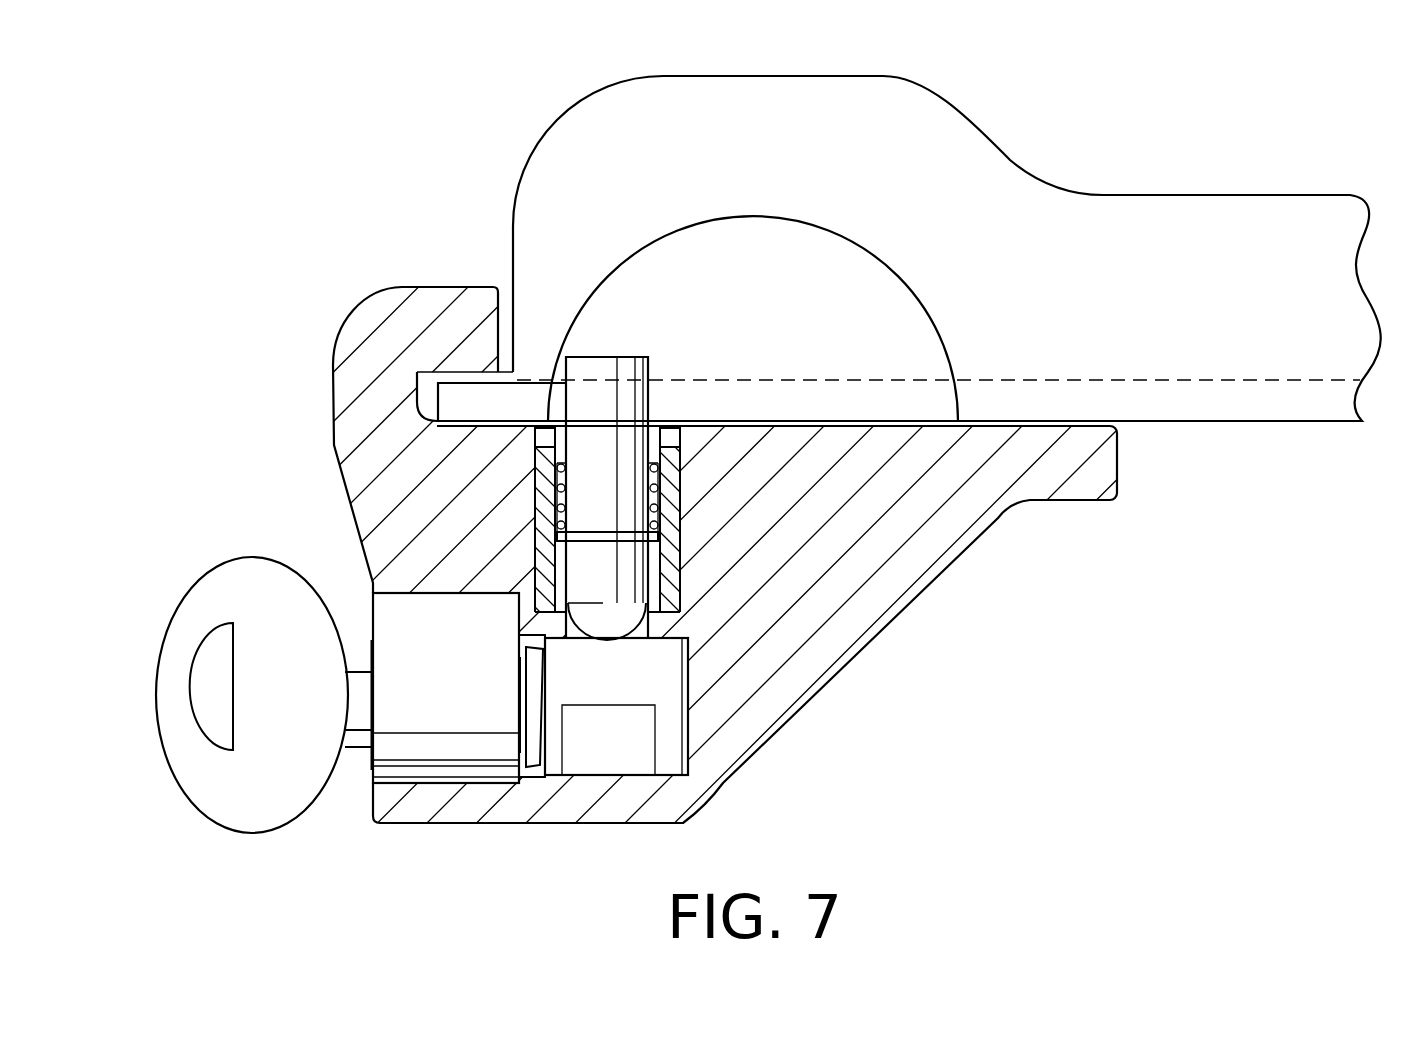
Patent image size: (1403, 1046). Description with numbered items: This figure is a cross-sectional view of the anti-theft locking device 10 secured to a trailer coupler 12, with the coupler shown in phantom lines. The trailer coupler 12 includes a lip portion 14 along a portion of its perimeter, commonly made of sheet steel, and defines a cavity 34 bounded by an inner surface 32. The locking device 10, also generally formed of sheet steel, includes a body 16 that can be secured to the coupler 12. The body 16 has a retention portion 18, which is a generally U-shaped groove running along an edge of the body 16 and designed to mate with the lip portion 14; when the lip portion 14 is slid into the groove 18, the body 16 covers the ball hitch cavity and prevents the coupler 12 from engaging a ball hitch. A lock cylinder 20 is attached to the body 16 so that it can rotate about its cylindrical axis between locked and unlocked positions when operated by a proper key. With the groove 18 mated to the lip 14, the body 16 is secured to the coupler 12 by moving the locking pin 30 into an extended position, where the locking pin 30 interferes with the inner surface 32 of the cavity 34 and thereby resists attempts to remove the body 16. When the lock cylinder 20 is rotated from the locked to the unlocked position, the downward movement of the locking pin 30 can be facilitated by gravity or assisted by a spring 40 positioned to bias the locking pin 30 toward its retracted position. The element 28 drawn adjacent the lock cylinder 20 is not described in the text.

The locking device 10 is at (285, 325).
The trailer coupler 12 is at (1085, 170).
The lip portion 14 is at (477, 393).
The body 16 is at (897, 578).
The retention portion 18 is at (425, 395).
The lock cylinder 20 is at (455, 753).
The cam 28 is at (553, 763).
The locking pin 30 is at (627, 370).
The inner surface 32 is at (598, 355).
The cavity 34 is at (743, 253).
The spring 40 is at (658, 512).